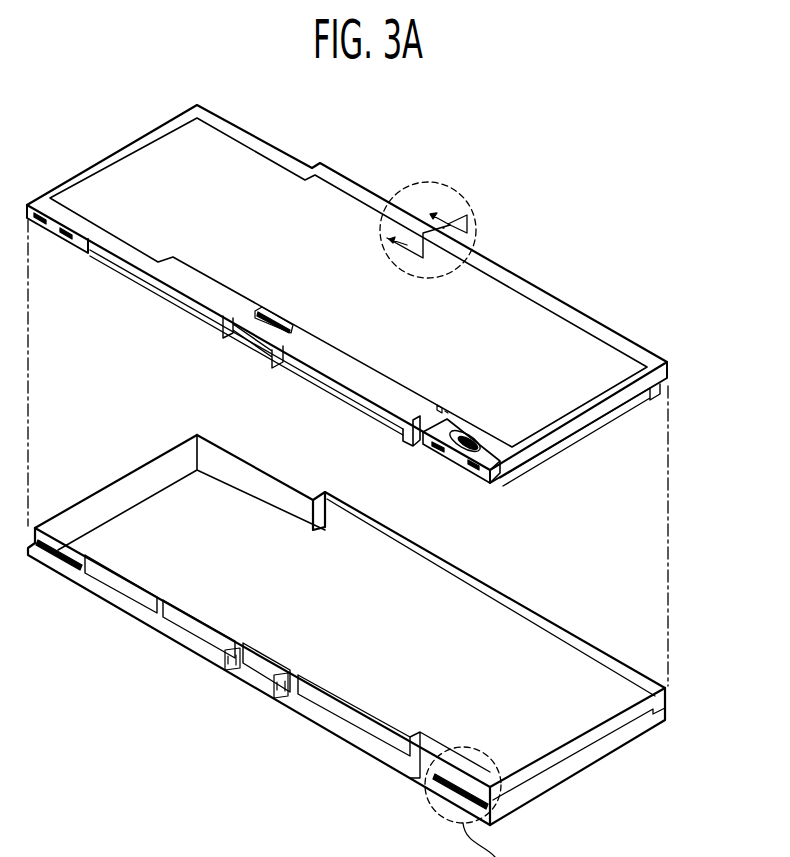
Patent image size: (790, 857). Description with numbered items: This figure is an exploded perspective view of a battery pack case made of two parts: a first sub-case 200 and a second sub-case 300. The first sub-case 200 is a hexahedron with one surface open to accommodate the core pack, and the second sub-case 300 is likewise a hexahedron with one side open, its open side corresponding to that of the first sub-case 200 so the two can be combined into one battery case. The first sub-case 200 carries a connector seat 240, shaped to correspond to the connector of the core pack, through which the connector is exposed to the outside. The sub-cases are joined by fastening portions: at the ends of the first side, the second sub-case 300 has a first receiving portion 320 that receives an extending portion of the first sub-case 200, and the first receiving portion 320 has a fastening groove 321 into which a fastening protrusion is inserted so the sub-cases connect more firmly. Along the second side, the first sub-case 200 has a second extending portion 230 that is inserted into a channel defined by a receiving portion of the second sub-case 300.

The second sub-case 300 is at (660, 345).
The first receiving portion 320 is at (456, 459).
The fastening groove 321 is at (467, 468).
The first sub-case 200 is at (616, 764).
The second extending portion 230 is at (550, 620).
The connector seat 240 is at (267, 670).